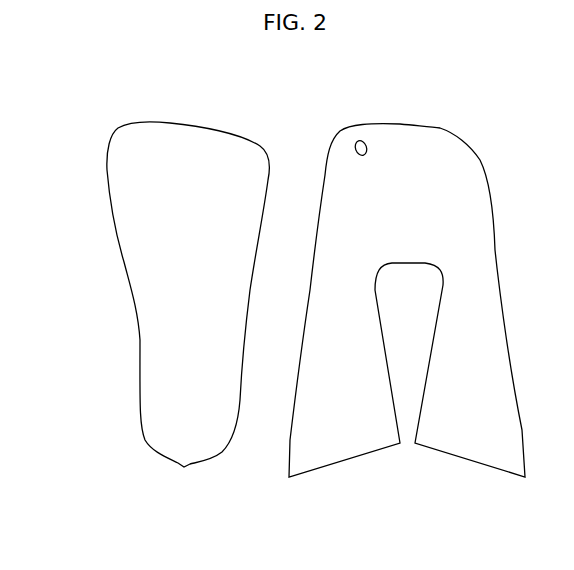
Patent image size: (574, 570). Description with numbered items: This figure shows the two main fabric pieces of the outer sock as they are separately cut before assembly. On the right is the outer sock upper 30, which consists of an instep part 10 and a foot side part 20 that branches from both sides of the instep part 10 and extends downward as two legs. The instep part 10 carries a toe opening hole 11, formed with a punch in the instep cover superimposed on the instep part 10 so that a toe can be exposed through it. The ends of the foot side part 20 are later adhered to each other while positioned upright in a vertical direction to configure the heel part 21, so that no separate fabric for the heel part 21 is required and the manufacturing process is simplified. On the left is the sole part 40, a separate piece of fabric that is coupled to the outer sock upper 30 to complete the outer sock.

The instep part 10 is at (478, 145).
The toe opening hole 11 is at (358, 141).
The foot side part 20 is at (528, 445).
The heel part 21 is at (455, 457).
The outer sock upper 30 is at (437, 129).
The sole part 40 is at (145, 280).